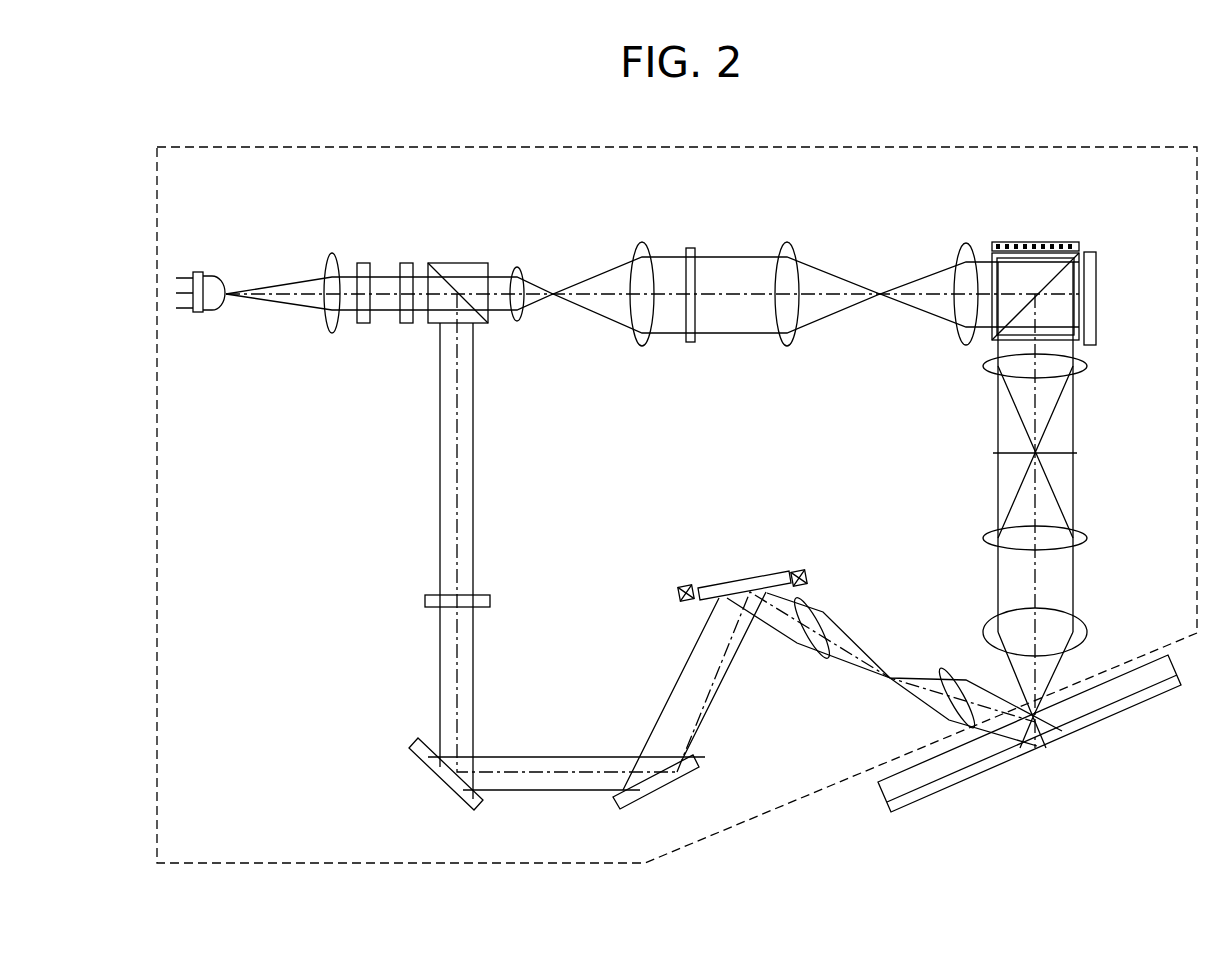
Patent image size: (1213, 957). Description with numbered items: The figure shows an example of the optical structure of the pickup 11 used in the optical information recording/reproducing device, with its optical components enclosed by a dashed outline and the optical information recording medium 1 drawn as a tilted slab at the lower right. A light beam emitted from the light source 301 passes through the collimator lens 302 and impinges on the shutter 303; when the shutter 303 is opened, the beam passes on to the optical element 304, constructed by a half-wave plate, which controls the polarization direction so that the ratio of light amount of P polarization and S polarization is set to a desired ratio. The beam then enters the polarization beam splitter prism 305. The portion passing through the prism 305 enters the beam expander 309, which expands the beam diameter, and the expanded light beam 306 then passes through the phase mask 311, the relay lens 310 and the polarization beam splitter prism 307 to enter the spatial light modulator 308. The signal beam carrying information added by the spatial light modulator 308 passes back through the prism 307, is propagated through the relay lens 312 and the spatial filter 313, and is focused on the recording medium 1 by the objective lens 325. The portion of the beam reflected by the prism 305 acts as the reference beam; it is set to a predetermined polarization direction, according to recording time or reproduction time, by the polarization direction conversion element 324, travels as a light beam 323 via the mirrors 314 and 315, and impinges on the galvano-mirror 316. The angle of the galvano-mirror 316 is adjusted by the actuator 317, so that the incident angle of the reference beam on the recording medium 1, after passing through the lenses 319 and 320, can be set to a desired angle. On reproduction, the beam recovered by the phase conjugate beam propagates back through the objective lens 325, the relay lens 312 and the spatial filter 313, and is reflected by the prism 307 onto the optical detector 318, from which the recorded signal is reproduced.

The optical information recording medium 1 is at (908, 812).
The pickup 11 is at (767, 147).
The light source 301 is at (220, 276).
The collimator lens 302 is at (332, 252).
The shutter 303 is at (363, 262).
The optical element 304 is at (406, 262).
The polarization beam splitter prism 305 is at (463, 262).
The light beam 306 is at (729, 270).
The polarization beam splitter prism 307 is at (1008, 273).
The spatial light modulator 308 is at (1043, 241).
The beam expander 309 is at (640, 224).
The relay lens 310 is at (960, 224).
The phase mask 311 is at (690, 345).
The relay lens 312 is at (971, 368).
The spatial filter 313 is at (1077, 453).
The mirror 314 is at (441, 778).
The mirror 315 is at (656, 795).
The galvano-mirror 316 is at (760, 580).
The actuator 317 is at (684, 586).
The optical detector 318 is at (1096, 307).
The lens 319 is at (796, 660).
The lens 320 is at (964, 680).
The light beam 323 is at (543, 764).
The polarization direction conversion element 324 is at (425, 601).
The objective lens 325 is at (1080, 638).